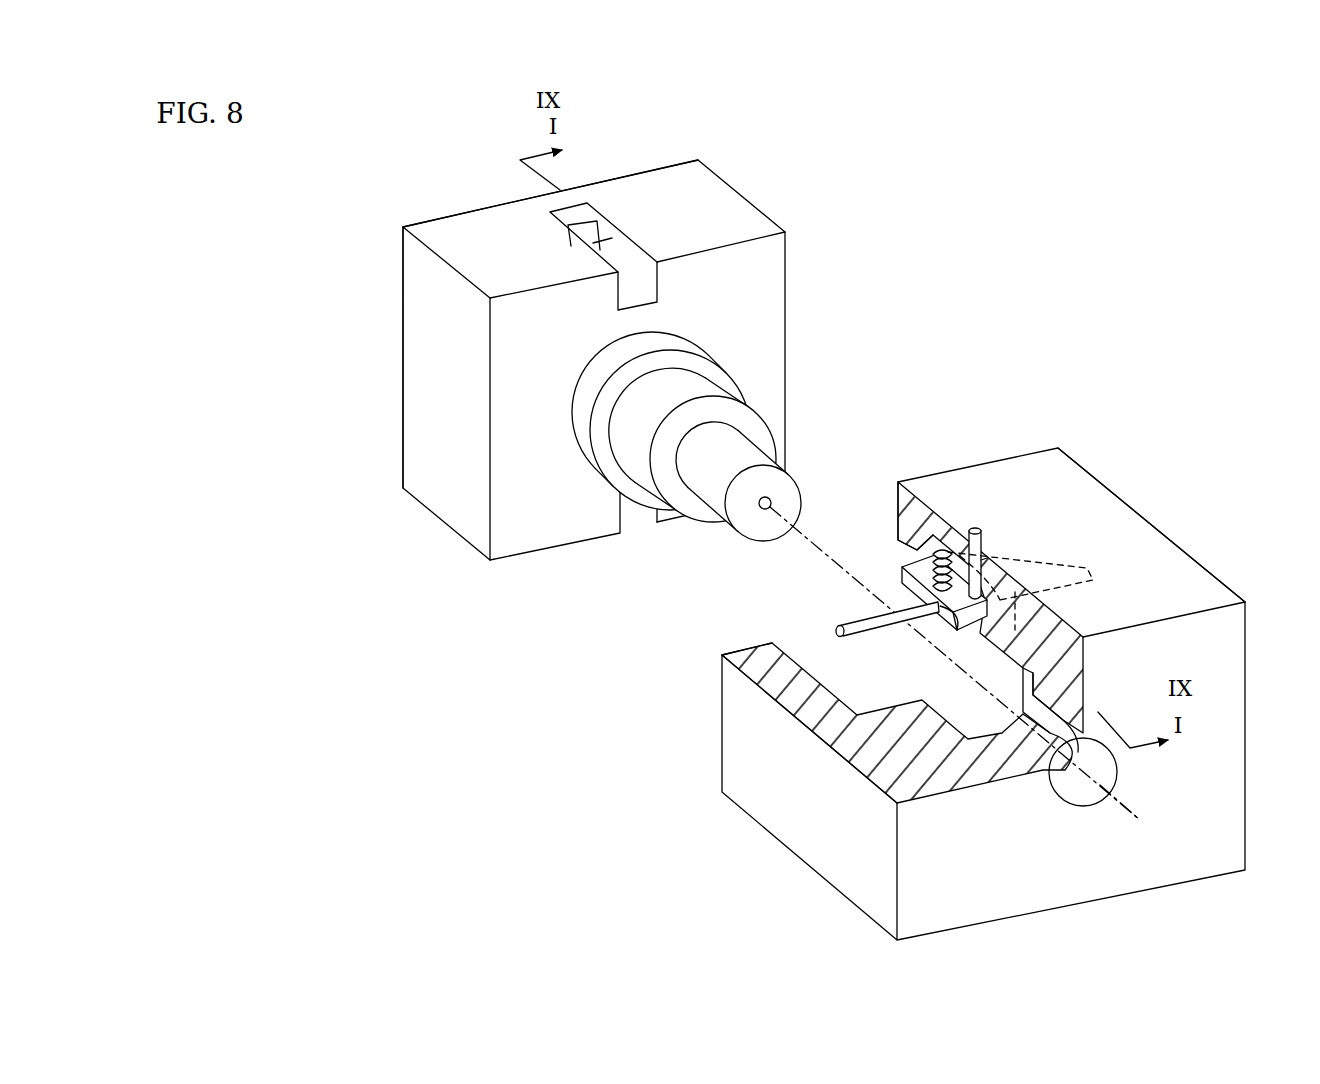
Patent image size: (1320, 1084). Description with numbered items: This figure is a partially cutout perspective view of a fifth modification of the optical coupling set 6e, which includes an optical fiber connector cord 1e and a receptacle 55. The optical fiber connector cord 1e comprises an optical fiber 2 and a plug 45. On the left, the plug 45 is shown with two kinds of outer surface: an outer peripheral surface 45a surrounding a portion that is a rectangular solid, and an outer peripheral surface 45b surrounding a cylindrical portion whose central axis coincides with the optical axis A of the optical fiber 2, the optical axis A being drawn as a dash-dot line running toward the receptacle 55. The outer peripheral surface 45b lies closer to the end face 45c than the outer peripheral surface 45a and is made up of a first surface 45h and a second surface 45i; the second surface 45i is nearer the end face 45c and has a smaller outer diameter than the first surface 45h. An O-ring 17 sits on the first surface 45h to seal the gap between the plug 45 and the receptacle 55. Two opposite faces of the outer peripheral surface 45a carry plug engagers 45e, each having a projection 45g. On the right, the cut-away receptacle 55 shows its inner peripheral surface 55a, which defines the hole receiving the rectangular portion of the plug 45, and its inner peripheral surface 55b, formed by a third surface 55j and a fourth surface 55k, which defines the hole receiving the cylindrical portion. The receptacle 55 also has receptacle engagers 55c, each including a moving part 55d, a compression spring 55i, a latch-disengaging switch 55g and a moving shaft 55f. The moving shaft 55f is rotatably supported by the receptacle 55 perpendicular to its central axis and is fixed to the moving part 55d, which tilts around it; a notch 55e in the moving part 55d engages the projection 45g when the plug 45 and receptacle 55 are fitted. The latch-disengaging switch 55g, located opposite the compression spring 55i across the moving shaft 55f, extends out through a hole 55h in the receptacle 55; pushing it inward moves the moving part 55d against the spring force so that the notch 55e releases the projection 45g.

The optical fiber connector cord 1e is at (806, 190).
The optical coupling set 6e is at (1097, 300).
The optical fiber 2 is at (777, 503).
The O-ring 17 is at (610, 402).
The plug 45 is at (440, 433).
The outer peripheral surface 45a is at (450, 228).
The outer peripheral surface 45b is at (707, 567).
The end face 45c is at (790, 487).
The plug engager 45e is at (618, 262).
The projection 45g is at (583, 222).
The first surface 45h is at (637, 482).
The second surface 45i is at (697, 482).
The receptacle 55 is at (1148, 513).
The inner peripheral surface 55a is at (802, 667).
The inner peripheral surface 55b is at (1092, 850).
The receptacle engager 55c is at (886, 556).
The moving part 55d is at (958, 626).
The notch 55e is at (905, 600).
The moving shaft 55f is at (1093, 580).
The latch-disengaging switch 55g is at (980, 532).
The hole 55h is at (987, 560).
The compression spring 55i is at (942, 548).
The third surface 55j is at (1053, 762).
The fourth surface 55k is at (1078, 798).
The optical axis A is at (1125, 790).